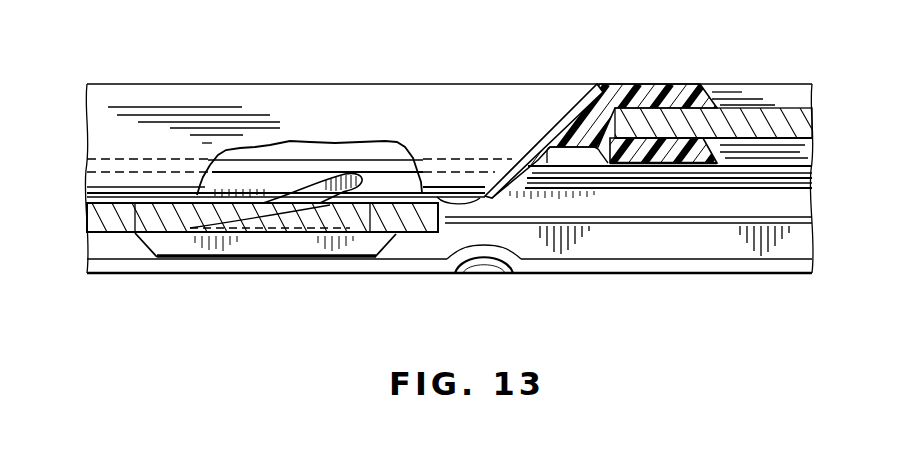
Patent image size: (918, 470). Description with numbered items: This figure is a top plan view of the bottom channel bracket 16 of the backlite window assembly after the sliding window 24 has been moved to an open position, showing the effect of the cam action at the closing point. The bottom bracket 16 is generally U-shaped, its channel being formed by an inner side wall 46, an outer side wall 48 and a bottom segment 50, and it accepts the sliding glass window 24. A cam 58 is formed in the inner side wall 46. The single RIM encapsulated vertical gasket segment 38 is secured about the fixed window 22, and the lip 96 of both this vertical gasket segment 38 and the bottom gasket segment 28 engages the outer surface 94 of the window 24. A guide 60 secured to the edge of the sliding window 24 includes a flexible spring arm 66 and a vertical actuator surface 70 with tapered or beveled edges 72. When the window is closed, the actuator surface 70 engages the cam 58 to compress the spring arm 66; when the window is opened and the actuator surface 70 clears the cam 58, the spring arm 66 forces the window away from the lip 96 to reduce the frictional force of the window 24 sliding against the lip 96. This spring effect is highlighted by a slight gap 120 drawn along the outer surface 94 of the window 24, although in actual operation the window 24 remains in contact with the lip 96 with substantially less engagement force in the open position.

The bottom channel bracket 16 is at (676, 280).
The fixed window 22 is at (768, 122).
The sliding window 24 is at (103, 221).
The bottom gasket segment 28 is at (168, 110).
The internal vertical gasket segment 38 is at (630, 93).
The inner side wall 46 is at (793, 268).
The outer side wall 48 is at (798, 168).
The bottom segment 50 is at (798, 233).
The cam 58 is at (485, 254).
The guide 60 is at (181, 263).
The flexible spring arm 66 is at (349, 178).
The vertical actuator surface 70 is at (238, 234).
The tapered edges 72 is at (388, 247).
The outer surface 94 is at (103, 202).
The lip 96 is at (522, 152).
The gap 120 is at (456, 201).